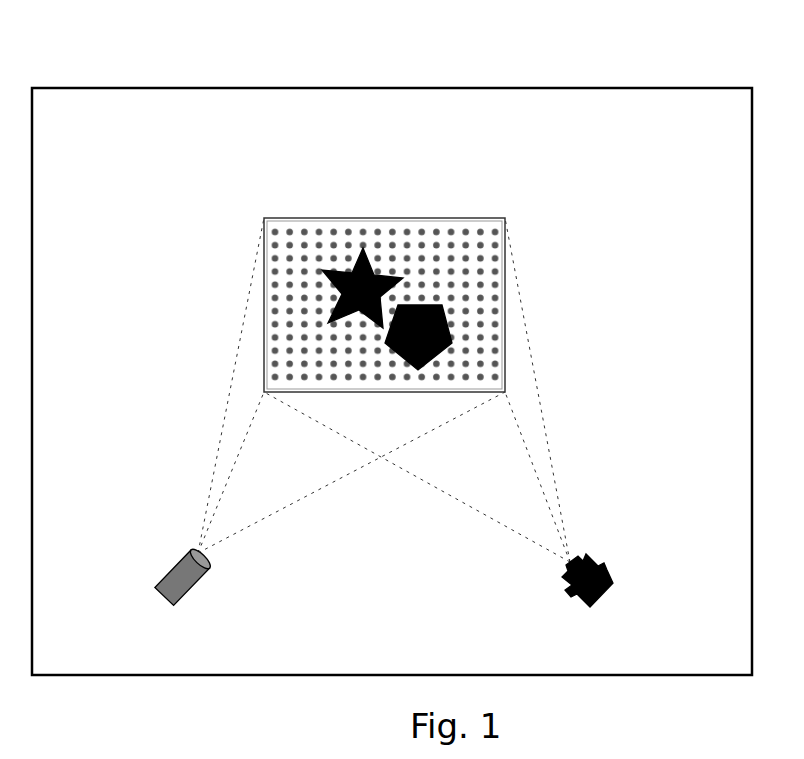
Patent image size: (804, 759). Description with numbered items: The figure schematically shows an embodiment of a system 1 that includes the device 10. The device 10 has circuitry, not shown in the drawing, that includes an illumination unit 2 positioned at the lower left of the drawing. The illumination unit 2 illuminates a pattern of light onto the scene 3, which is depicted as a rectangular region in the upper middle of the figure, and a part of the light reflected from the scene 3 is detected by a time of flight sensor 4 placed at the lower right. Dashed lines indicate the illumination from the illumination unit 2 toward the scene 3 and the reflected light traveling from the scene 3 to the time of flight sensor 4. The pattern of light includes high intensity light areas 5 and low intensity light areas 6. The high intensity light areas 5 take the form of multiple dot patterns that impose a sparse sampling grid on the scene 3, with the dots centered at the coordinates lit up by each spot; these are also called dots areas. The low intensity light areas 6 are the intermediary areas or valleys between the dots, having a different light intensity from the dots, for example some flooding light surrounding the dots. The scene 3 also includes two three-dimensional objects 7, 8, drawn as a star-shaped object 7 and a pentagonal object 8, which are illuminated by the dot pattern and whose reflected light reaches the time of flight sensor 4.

The system 1 is at (395, 84).
The illumination unit 2 is at (170, 573).
The scene 3 is at (312, 218).
The time of flight sensor 4 is at (600, 570).
The high intensity light areas 5 is at (277, 272).
The low intensity light areas 6 is at (268, 317).
The three-dimensional object 7 is at (365, 252).
The three-dimensional object 8 is at (415, 305).
The device 10 is at (387, 560).